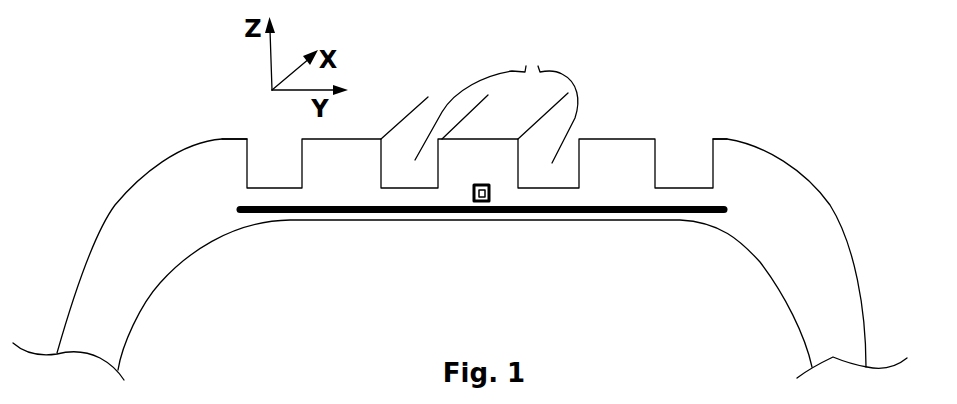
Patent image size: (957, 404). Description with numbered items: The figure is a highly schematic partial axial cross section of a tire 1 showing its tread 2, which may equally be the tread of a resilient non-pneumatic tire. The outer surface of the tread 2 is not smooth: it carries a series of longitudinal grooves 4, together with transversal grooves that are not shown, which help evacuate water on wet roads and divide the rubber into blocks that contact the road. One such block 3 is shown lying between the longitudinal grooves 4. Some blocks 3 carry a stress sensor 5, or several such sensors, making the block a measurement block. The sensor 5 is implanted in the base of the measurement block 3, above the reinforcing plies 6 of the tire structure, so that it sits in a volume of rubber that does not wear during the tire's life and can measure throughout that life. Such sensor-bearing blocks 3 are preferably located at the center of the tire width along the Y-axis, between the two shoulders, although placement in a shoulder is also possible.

The tire 1 is at (197, 105).
The tread 2 is at (634, 120).
The block 3 is at (502, 168).
The longitudinal grooves 4 is at (479, 103).
The stress sensor 5 is at (481, 202).
The reinforcing plies 6 is at (277, 213).